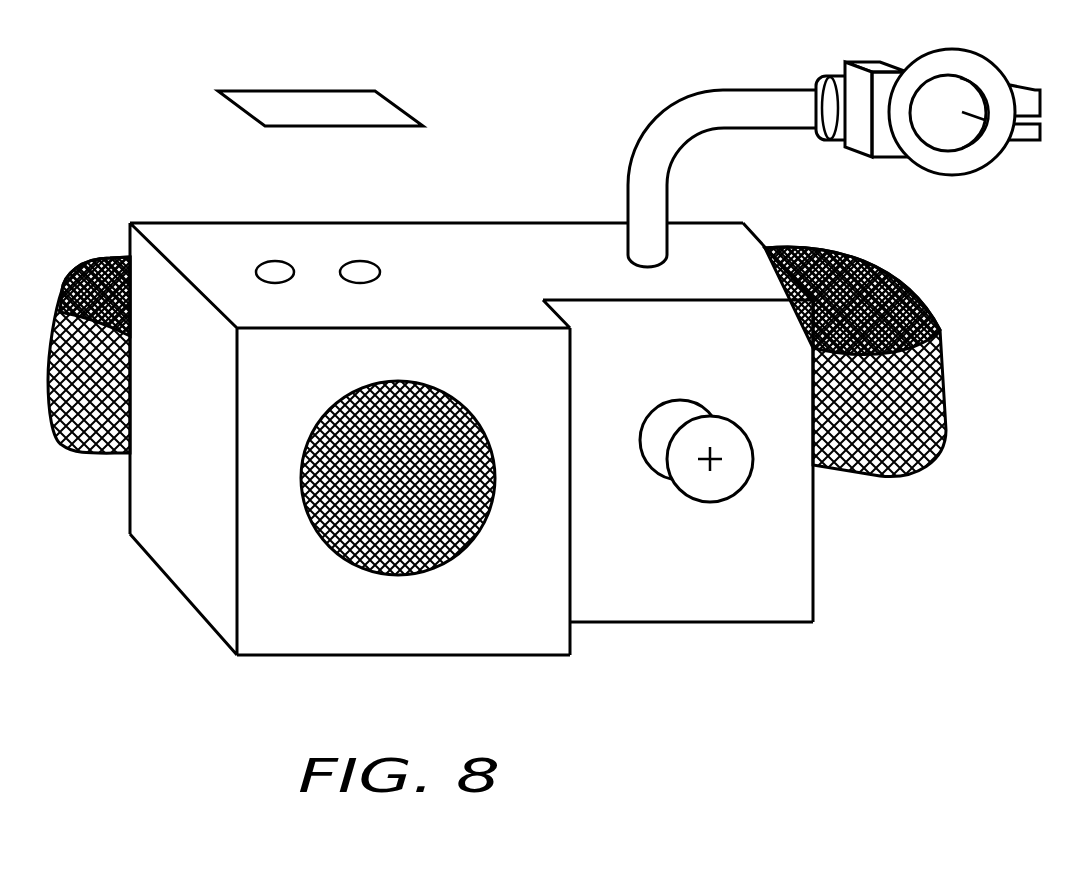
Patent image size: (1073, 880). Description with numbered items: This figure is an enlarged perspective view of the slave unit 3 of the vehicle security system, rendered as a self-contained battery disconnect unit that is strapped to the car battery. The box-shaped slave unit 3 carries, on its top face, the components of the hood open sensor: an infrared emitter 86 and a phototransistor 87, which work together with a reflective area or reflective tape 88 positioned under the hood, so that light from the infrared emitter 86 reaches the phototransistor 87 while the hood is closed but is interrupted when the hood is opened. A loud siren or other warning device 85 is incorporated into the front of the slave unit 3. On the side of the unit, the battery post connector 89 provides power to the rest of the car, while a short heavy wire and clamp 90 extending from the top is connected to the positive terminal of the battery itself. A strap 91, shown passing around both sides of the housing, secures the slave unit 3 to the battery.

The slave unit 3 is at (563, 223).
The warning device 85 is at (357, 397).
The infrared emitter 86 is at (257, 281).
The phototransistor 87 is at (418, 248).
The reflective tape 88 is at (329, 107).
The battery post connector 89 is at (713, 413).
The clamp 90 is at (915, 48).
The strap 91 is at (865, 250).